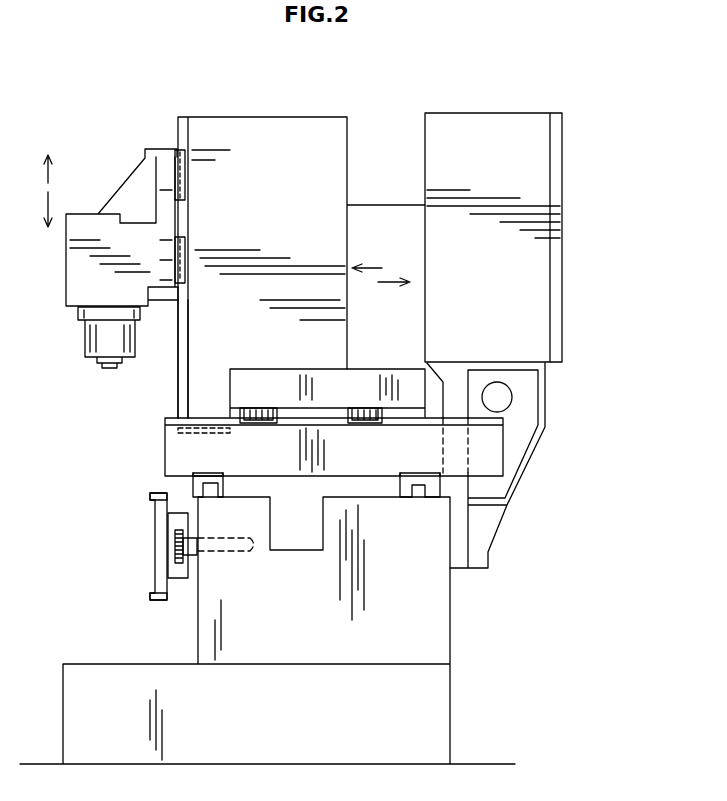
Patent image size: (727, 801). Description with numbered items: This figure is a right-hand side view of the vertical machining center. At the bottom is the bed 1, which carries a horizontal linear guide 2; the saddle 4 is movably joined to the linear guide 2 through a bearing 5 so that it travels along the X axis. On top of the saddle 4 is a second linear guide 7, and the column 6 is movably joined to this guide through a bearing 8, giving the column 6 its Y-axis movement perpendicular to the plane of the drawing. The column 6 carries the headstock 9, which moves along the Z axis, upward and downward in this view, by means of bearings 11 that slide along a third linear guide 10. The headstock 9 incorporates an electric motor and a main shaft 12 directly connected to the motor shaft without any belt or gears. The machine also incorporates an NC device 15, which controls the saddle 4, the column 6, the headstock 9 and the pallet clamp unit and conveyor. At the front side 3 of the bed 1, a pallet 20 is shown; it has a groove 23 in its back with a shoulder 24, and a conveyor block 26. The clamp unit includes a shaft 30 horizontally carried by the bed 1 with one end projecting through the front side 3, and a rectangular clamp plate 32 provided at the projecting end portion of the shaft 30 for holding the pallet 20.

The bed 1 is at (430, 627).
The horizontal linear guide 2 is at (210, 493).
The front side of the bed 3 is at (197, 505).
The saddle 4 is at (177, 445).
The bearing 5 is at (225, 477).
The column 6 is at (347, 175).
The second linear guide 7 is at (210, 417).
The bearing 8 is at (265, 412).
The headstock 9 is at (80, 270).
The third linear guide 10 is at (183, 348).
The bearings 11 is at (187, 185).
The main shaft 12 is at (105, 368).
The NC device 15 is at (537, 273).
The pallet 20 is at (155, 543).
The groove 23 is at (170, 517).
The shoulder 24 is at (177, 513).
The conveyor block 26 is at (153, 600).
The shaft 30 is at (238, 551).
The clamp plate 32 is at (178, 557).